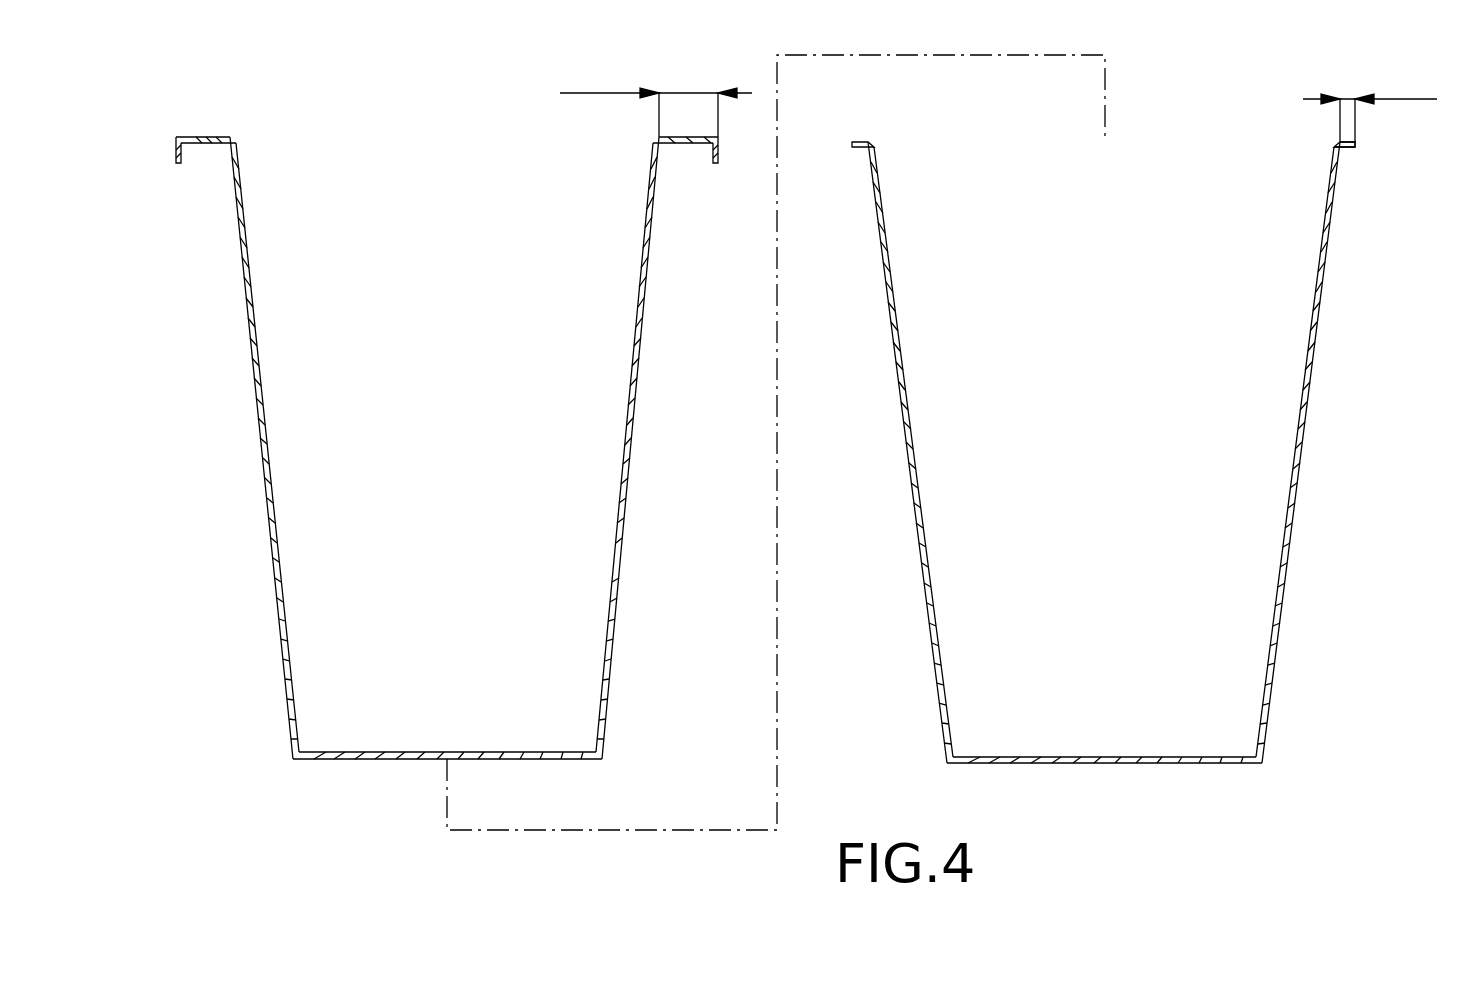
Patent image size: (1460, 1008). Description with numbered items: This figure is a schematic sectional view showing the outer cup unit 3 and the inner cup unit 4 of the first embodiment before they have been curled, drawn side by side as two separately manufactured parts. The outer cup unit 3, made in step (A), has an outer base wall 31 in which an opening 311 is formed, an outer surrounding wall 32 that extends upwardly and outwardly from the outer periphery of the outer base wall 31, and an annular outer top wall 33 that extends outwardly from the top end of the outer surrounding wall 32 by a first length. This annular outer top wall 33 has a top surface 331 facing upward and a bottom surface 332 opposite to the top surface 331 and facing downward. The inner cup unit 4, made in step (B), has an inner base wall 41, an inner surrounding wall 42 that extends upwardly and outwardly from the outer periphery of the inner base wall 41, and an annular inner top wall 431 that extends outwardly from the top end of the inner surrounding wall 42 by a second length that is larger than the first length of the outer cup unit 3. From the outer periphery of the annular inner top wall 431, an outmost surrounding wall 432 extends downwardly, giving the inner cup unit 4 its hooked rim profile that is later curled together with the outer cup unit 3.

The outer cup unit 3 is at (1320, 377).
The outer base wall 31 is at (1233, 763).
The opening 311 is at (1105, 763).
The outer surrounding wall 32 is at (1287, 578).
The annular outer top wall 33 is at (1086, 111).
The top surface 331 is at (852, 142).
The bottom surface 332 is at (1350, 150).
The inner cup unit 4 is at (237, 375).
The inner base wall 41 is at (343, 755).
The inner surrounding wall 42 is at (275, 578).
The annular inner top wall 431 is at (210, 137).
The outmost surrounding wall 432 is at (176, 153).